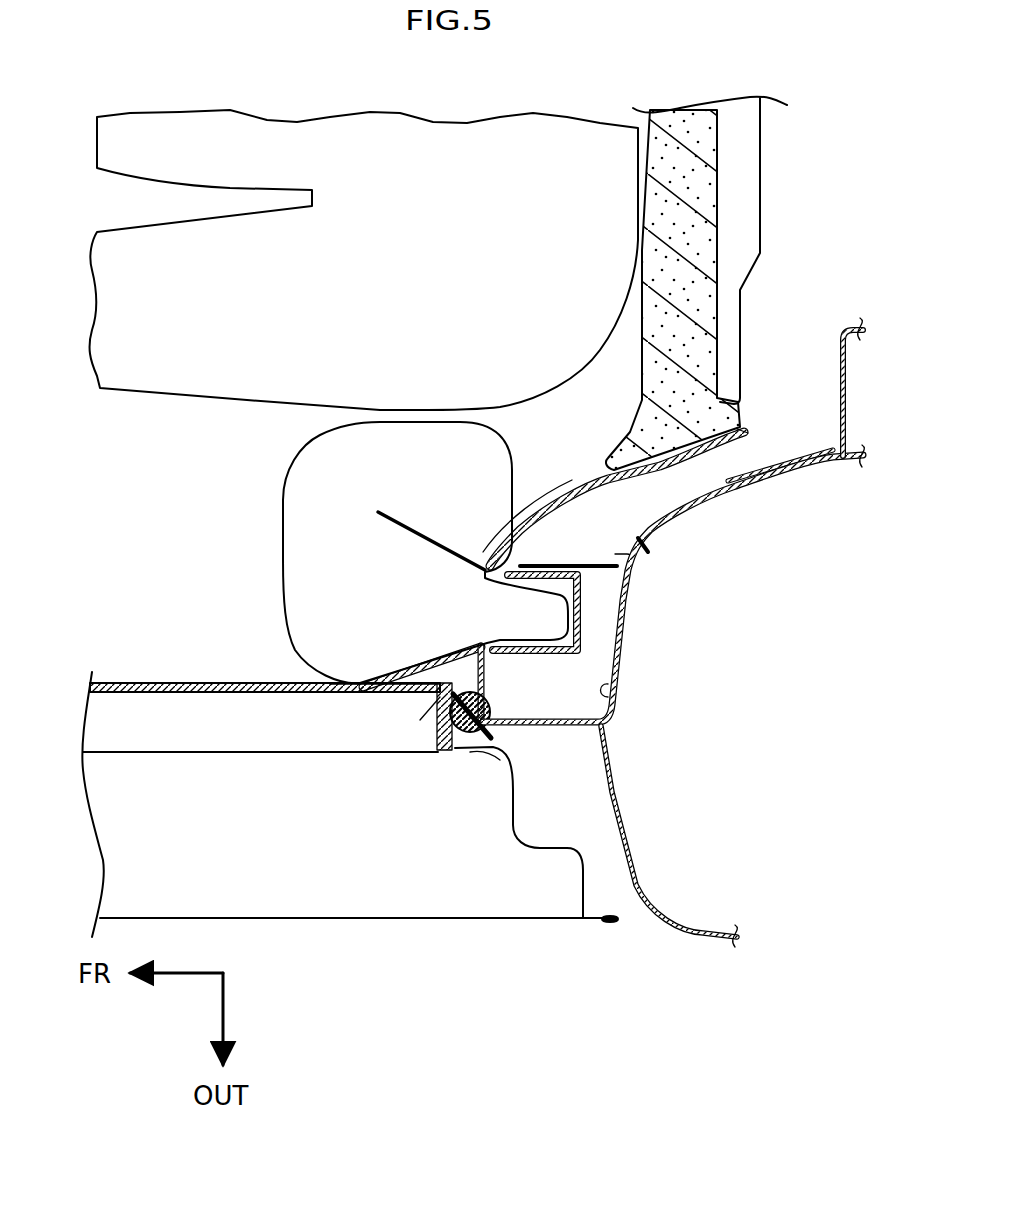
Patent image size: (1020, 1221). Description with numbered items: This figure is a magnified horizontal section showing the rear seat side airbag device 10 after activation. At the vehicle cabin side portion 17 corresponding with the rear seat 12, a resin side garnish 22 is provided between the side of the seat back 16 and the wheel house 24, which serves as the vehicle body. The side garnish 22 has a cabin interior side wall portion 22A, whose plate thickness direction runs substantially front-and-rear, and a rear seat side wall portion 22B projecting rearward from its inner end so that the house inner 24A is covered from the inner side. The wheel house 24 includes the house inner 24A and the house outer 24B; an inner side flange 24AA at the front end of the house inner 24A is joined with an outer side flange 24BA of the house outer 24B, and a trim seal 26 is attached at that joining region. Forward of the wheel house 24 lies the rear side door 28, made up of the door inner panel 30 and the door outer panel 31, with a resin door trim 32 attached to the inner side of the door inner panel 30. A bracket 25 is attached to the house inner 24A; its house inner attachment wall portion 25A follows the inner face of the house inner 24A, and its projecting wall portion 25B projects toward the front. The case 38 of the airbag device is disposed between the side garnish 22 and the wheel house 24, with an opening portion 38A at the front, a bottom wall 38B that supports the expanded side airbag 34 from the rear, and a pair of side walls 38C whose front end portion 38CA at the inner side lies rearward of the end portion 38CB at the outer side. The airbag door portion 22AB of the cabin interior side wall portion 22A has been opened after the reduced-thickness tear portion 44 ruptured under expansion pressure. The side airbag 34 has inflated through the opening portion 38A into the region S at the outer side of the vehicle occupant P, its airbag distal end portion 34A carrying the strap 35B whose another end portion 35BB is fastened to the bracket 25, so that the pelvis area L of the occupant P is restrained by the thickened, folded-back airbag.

The rear seat side airbag device 10 is at (253, 577).
The rear seat 12 is at (770, 224).
The seat back 16 is at (733, 335).
The vehicle cabin side portion 17 is at (133, 568).
The side garnish 22 is at (602, 474).
The cabin interior side wall portion 22A is at (435, 722).
The airbag door portion 22AB is at (428, 658).
The rear seat side wall portion 22B is at (672, 436).
The wheel house 24 is at (568, 748).
The house inner 24A is at (610, 692).
The inner side flange 24AA is at (605, 720).
The house outer 24B is at (700, 940).
The outer side flange 24BA is at (507, 762).
The bracket 25 is at (622, 574).
The house inner attachment wall portion 25A is at (634, 540).
The projecting wall portion 25B is at (626, 600).
The trim seal 26 is at (473, 752).
The rear side door 28 is at (318, 940).
The door inner panel 30 is at (538, 845).
The door outer panel 31 is at (504, 924).
The door trim 32 is at (177, 681).
The side airbag 34 is at (282, 540).
The airbag distal end portion 34A is at (490, 558).
The strap 35B is at (578, 561).
The another end portion 35BB is at (640, 560).
The case 38 is at (585, 658).
The opening portion 38A is at (497, 643).
The bottom wall 38B is at (583, 627).
The side walls 38C is at (542, 557).
The end portion 38CA is at (520, 555).
The end portion 38CB is at (487, 643).
The tear portion 44 is at (366, 694).
The vehicle occupant P is at (178, 398).
The region S is at (318, 420).
The pelvis area L is at (587, 357).